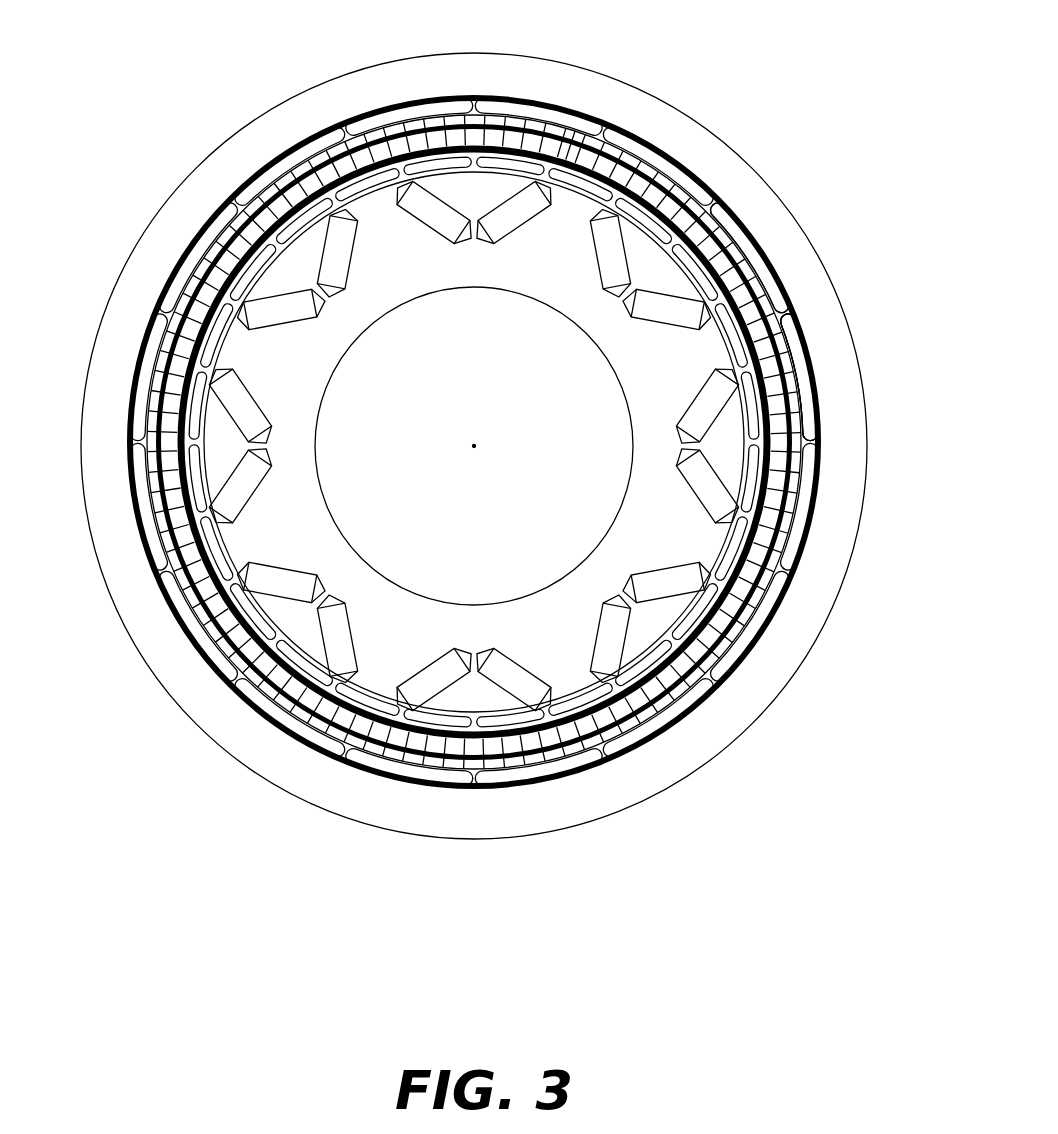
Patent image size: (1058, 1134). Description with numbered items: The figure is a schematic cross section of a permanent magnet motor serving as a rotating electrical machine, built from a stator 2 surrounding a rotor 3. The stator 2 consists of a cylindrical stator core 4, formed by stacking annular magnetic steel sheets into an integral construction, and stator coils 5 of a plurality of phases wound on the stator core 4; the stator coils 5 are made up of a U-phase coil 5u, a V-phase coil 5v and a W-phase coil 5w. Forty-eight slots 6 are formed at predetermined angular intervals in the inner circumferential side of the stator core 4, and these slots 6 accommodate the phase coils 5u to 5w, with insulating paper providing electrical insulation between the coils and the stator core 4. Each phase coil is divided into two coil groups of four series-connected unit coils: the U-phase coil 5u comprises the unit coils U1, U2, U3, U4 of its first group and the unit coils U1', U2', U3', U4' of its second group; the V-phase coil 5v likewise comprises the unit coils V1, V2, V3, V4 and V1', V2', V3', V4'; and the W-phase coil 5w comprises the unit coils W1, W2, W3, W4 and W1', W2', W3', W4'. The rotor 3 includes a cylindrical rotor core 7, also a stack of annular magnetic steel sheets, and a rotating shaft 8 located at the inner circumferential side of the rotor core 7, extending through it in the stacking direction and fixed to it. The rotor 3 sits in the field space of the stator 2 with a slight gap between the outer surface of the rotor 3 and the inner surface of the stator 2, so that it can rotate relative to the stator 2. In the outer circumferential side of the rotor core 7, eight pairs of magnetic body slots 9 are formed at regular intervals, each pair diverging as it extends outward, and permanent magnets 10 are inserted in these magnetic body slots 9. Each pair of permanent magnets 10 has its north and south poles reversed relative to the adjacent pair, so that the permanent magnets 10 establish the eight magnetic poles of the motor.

The stator 2 is at (753, 160).
The rotor 3 is at (743, 223).
The stator core 4 is at (563, 75).
The stator coils 5 is at (813, 384).
The U-phase coil 5u is at (835, 487).
The V-phase coil 5v is at (803, 332).
The W-phase coil 5w is at (783, 290).
The slots 6 is at (495, 262).
The rotor core 7 is at (638, 632).
The rotating shaft 8 is at (603, 512).
The magnetic body slots 9 is at (408, 222).
The permanent magnets 10 is at (510, 223).
The first unit coil U1 is at (512, 118).
The first unit coil U1' is at (533, 109).
The second unit coil U2 is at (806, 324).
The second unit coil U2' is at (156, 256).
The third unit coil U3 is at (122, 521).
The third unit coil U3' is at (788, 627).
The fourth unit coil U4 is at (564, 796).
The fourth unit coil U4' is at (314, 771).
The first unit coil V1 is at (537, 83).
The first unit coil V1' is at (760, 236).
The second unit coil V2 is at (814, 377).
The second unit coil V2' is at (288, 134).
The third unit coil V3 is at (117, 377).
The third unit coil V3' is at (702, 718).
The fourth unit coil V4 is at (414, 813).
The fourth unit coil V4' is at (195, 650).
The first unit coil W1 is at (633, 234).
The first unit coil W1' is at (735, 407).
The second unit coil W2 is at (682, 601).
The second unit coil W2' is at (439, 179).
The third unit coil W3 is at (260, 317).
The third unit coil W3' is at (508, 704).
The fourth unit coil W4 is at (343, 676).
The fourth unit coil W4' is at (244, 543).